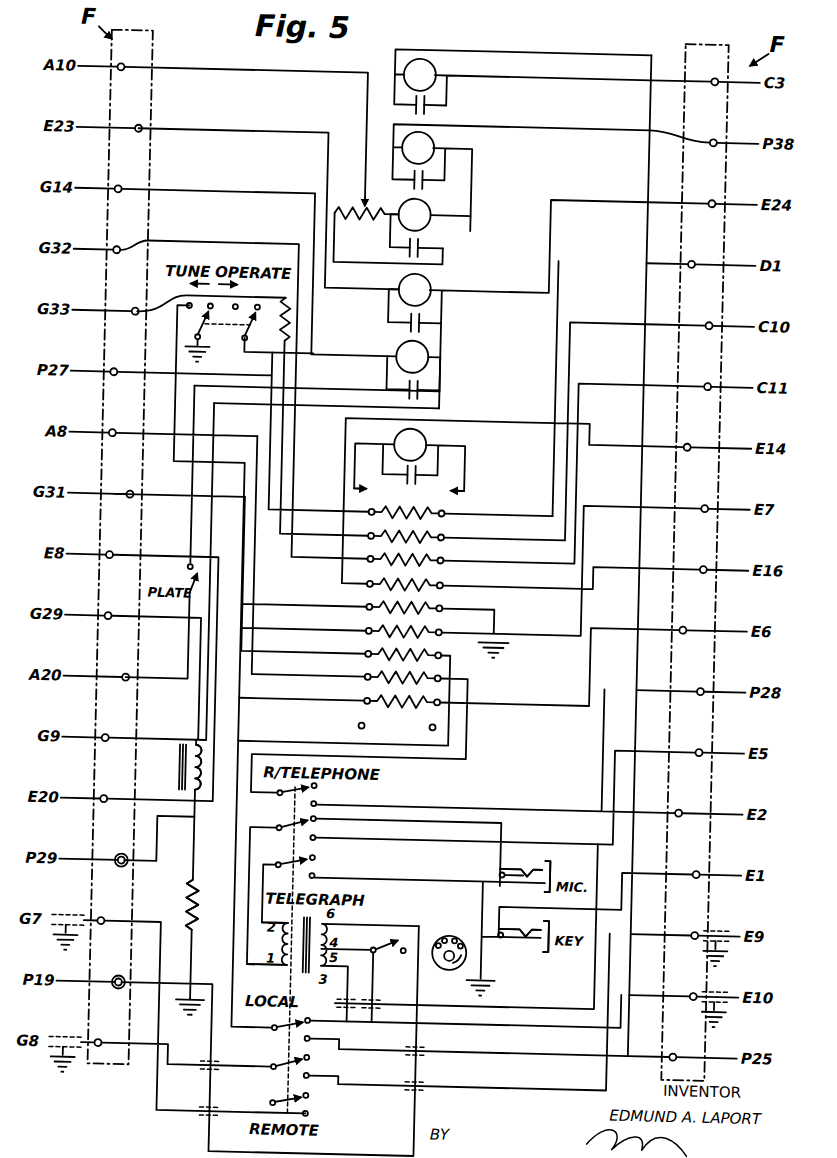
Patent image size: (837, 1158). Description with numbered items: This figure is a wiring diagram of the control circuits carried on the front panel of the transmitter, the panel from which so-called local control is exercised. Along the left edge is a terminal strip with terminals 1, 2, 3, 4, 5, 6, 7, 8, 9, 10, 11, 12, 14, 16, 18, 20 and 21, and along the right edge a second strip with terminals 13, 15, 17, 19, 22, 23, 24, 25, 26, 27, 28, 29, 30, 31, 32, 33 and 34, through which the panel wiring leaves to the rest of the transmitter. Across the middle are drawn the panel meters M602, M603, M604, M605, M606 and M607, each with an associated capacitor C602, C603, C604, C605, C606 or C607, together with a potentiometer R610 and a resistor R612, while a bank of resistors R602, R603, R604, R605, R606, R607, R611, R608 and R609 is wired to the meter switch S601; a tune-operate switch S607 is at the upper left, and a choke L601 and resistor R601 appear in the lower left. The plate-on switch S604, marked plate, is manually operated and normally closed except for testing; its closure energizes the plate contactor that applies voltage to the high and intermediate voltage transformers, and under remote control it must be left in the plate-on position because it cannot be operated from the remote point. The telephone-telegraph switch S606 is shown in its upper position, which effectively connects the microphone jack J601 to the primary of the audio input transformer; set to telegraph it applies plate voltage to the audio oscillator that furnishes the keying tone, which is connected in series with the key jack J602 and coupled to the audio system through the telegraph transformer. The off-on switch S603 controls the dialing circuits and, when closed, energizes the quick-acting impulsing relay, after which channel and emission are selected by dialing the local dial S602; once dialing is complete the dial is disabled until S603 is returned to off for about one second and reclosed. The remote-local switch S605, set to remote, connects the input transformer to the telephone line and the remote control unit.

The terminal 1 (A10) 1 is at (125, 58).
The terminal 2 (G14) 2 is at (122, 180).
The terminal 3 (G32) 3 is at (119, 241).
The terminal 4 (P27) 4 is at (116, 363).
The terminal 5 (A8) 5 is at (115, 424).
The terminal 6 (E8) 6 is at (111, 546).
The terminal 7 (G29) 7 is at (109, 607).
The terminal 8 (G9) 8 is at (107, 729).
The terminal 9 (E20) 9 is at (105, 790).
The terminal 10 (G7) 10 is at (105, 911).
The terminal 11 (G8) 11 is at (102, 1033).
The terminal 12 (E23) 12 is at (141, 119).
The terminal 13 (D1) 13 is at (696, 255).
The terminal 14 (G33) 14 is at (133, 302).
The terminal 15 (E14) 15 is at (690, 438).
The terminal 16 (G31) 16 is at (129, 485).
The terminal 17 (E6) 17 is at (687, 621).
The terminal 18 (A20) 18 is at (123, 668).
The terminal 19 (E2) 19 is at (681, 804).
The terminal 20 (P29) 20 is at (116, 852).
The terminal 21 (P19) 21 is at (112, 990).
The terminal 22 (P38) 22 is at (713, 134).
The terminal 23 (E24) 23 is at (712, 195).
The terminal 24 (C10) 24 is at (709, 317).
The terminal 25 (C11) 25 is at (708, 378).
The terminal 26 (E7) 26 is at (705, 499).
The terminal 27 (E16) 27 is at (704, 560).
The terminal 28 (P28) 28 is at (700, 682).
The terminal 29 (E5) 29 is at (699, 743).
The terminal 30 (E1) 30 is at (696, 865).
The terminal 31 (E9) 31 is at (695, 926).
The terminal 32 (E10) 32 is at (693, 987).
The terminal 33 (C3) 33 is at (711, 73).
The terminal 34 (P25) 34 is at (674, 1048).
The meter M602 is at (428, 86).
The capacitor C602 is at (420, 110).
The meter M603 is at (430, 145).
The capacitor C603 is at (420, 185).
The meter M604 is at (425, 203).
The capacitor C604 is at (420, 254).
The meter M605 is at (426, 297).
The capacitor C605 is at (420, 327).
The meter M606 is at (426, 352).
The capacitor C606 is at (420, 388).
The meter M607 is at (426, 437).
The capacitor C607 is at (420, 470).
The potentiometer R610 is at (359, 226).
The resistor R612 is at (287, 326).
The resistor R602 is at (435, 518).
The resistor R603 is at (435, 542).
The resistor R604 is at (435, 565).
The resistor R605 is at (435, 590).
The resistor R606 is at (378, 612).
The resistor R607 is at (378, 636).
The resistor R611 is at (378, 659).
The resistor R608 is at (378, 682).
The resistor R609 is at (378, 706).
The resistor R601 is at (194, 907).
The inductor L601 is at (180, 765).
The tune-operate switch S607 is at (218, 344).
The plate ON switch S604 is at (188, 566).
The meter selector switch S601 is at (401, 742).
The telephone-telegraph switch S606 is at (326, 802).
The local dial S602 is at (478, 920).
The off-on switch S603 is at (398, 958).
The remote-local switch S605 is at (326, 1101).
The microphone jack J601 is at (500, 870).
The key jack J602 is at (515, 938).